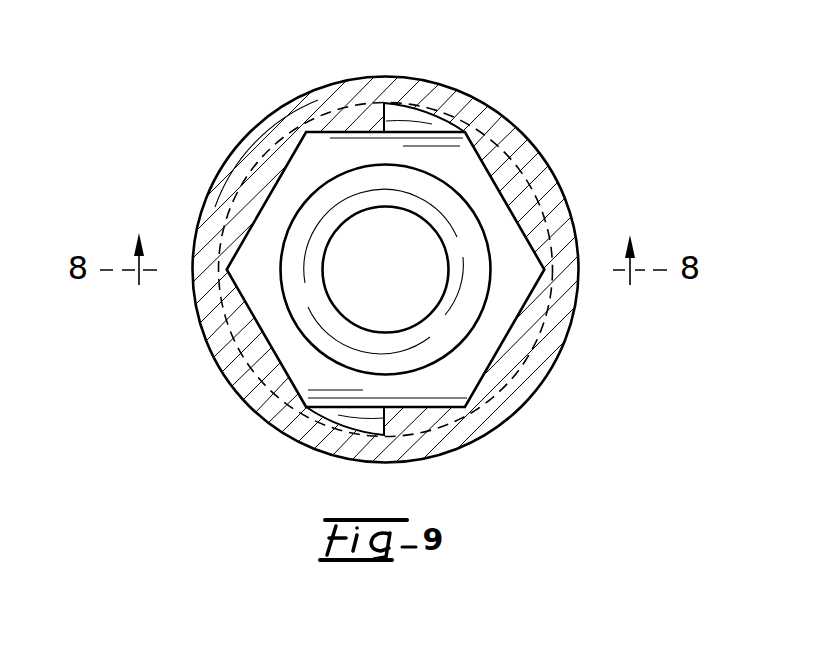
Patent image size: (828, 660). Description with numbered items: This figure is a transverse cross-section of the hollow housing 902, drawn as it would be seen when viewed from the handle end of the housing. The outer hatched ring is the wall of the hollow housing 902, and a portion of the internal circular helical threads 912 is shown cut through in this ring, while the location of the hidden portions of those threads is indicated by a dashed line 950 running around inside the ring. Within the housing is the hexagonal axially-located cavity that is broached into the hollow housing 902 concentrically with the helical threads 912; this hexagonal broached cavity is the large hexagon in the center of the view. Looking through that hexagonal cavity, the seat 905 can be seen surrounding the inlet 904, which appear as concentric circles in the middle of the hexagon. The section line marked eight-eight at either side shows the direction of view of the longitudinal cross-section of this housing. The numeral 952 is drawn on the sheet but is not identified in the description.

The hollow housing 902 is at (305, 106).
The inlet 904 is at (395, 245).
The seat 905 is at (320, 212).
The internal circular helical threads 912 is at (437, 122).
The dashed line 950 is at (223, 222).
The hexagonal socket 952 is at (275, 382).